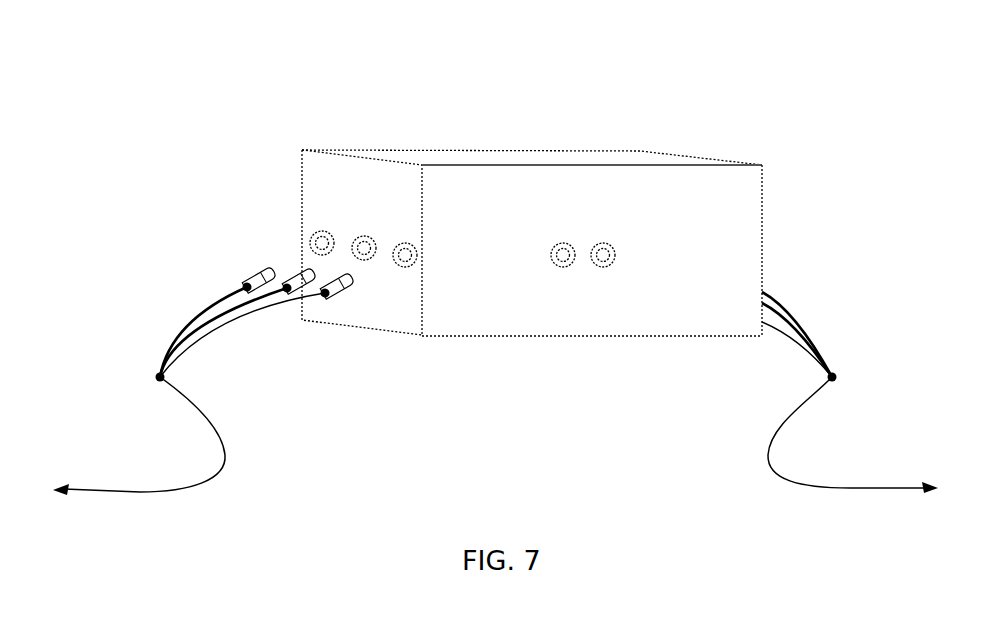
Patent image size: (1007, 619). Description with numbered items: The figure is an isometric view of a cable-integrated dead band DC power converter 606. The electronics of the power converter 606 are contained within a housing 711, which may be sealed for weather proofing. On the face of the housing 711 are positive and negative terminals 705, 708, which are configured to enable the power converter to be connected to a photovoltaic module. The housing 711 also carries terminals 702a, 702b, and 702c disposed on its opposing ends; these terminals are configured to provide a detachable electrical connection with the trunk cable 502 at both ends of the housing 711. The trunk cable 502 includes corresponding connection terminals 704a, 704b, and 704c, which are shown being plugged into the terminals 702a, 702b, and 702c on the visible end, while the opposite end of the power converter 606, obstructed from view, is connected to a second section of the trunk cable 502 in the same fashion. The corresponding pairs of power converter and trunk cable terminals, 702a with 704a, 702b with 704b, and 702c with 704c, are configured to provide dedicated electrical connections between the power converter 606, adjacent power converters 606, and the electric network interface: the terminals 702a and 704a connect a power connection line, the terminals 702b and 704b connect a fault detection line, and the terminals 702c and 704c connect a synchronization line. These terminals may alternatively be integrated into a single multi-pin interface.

The trunk cable 502 is at (222, 443).
The cable-integrated dead band DC power converter 606 is at (518, 106).
The terminal 702a is at (323, 231).
The terminal 702b is at (364, 236).
The terminal 702c is at (407, 243).
The connection terminal 704a is at (253, 275).
The connection terminal 704b is at (296, 274).
The connection terminal 704c is at (343, 273).
The positive terminal 705 is at (566, 243).
The negative terminal 708 is at (614, 245).
The housing 711 is at (575, 336).